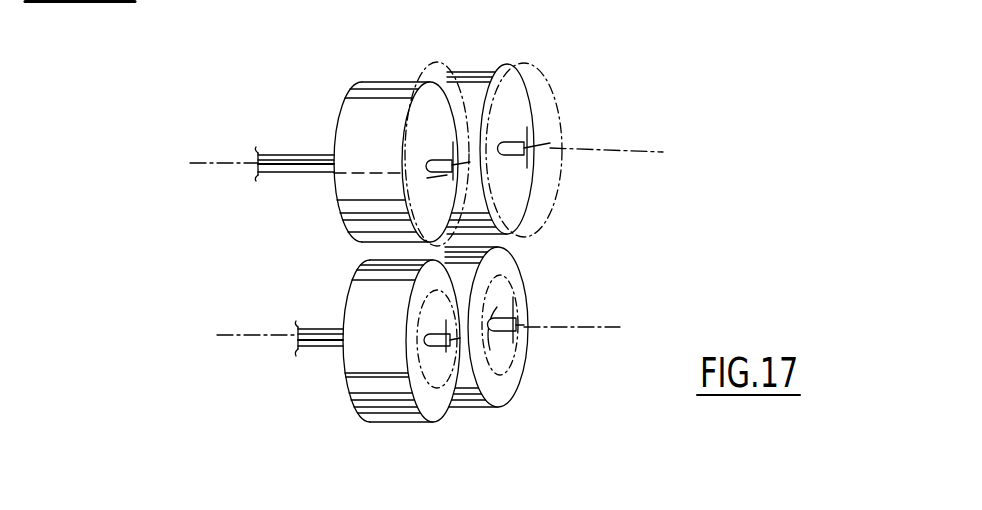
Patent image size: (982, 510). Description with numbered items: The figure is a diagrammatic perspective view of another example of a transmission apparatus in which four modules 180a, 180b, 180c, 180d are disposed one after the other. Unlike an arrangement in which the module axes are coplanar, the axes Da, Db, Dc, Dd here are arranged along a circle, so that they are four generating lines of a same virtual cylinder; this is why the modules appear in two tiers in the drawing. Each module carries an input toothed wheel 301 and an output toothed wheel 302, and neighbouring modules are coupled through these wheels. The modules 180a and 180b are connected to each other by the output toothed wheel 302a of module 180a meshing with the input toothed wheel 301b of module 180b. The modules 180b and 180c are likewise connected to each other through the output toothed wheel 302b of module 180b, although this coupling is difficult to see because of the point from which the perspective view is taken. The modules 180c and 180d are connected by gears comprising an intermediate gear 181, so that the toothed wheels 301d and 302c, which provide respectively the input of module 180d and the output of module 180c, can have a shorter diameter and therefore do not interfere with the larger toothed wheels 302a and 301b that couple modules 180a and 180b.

The module 180a is at (372, 118).
The module 180b is at (535, 182).
The module 180c is at (512, 368).
The module 180d is at (382, 425).
The intermediate gear 181 is at (503, 397).
The toothed wheel 301 is at (287, 162).
The toothed wheel 301b is at (560, 121).
The toothed wheel 301d is at (427, 373).
The toothed wheel 302 is at (300, 347).
The toothed wheel 302a is at (476, 96).
The toothed wheel 302b is at (427, 62).
The toothed wheel 302c is at (510, 288).
The axis Da is at (212, 163).
The axis Db is at (638, 150).
The axis Dc is at (602, 327).
The axis Dd is at (242, 335).